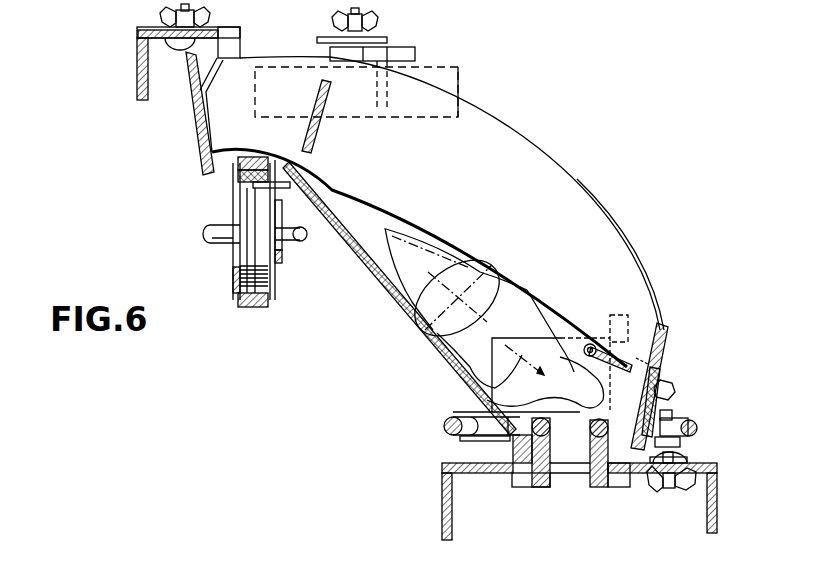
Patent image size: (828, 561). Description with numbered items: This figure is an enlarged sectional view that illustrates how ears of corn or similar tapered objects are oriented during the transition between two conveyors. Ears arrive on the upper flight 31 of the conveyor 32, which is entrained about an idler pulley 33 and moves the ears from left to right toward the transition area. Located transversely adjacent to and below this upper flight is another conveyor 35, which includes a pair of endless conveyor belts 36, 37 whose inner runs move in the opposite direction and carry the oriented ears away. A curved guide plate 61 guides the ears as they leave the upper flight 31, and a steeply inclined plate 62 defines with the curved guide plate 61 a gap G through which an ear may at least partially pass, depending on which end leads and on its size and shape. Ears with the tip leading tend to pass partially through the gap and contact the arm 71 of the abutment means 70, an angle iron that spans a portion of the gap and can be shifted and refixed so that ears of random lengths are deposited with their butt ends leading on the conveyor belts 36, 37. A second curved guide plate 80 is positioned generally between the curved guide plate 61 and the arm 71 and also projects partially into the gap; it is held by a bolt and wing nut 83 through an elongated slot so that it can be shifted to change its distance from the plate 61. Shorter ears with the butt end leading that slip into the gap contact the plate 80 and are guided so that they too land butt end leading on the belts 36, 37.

The upper flight 31 is at (249, 157).
The conveyor 32 is at (254, 312).
The idler pulley 33 is at (240, 265).
The conveyor 35 is at (432, 428).
The conveyor belt 36 is at (570, 430).
The conveyor belt 37 is at (585, 433).
The curved guide plate 61 is at (526, 210).
The steeply inclined plate 62 is at (386, 318).
The abutment means 70 is at (572, 346).
The arm 71 is at (497, 357).
The curved guide plate 80 is at (663, 367).
The wing nut 83 is at (665, 390).